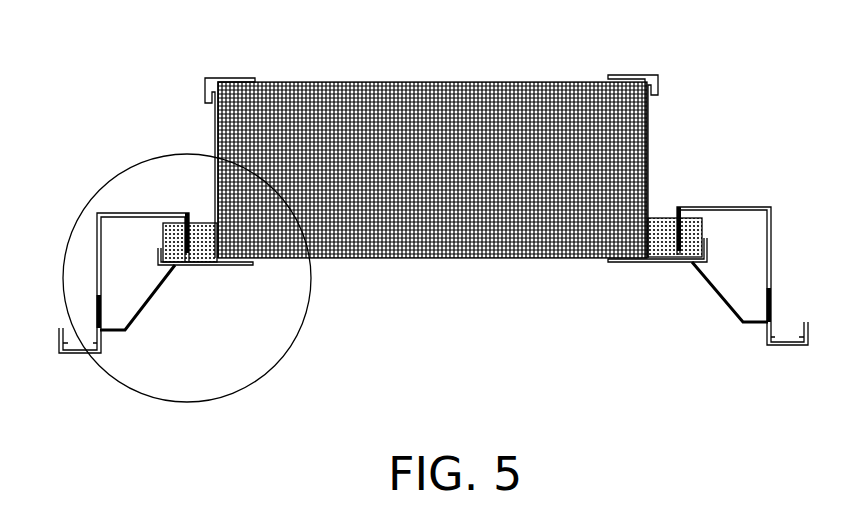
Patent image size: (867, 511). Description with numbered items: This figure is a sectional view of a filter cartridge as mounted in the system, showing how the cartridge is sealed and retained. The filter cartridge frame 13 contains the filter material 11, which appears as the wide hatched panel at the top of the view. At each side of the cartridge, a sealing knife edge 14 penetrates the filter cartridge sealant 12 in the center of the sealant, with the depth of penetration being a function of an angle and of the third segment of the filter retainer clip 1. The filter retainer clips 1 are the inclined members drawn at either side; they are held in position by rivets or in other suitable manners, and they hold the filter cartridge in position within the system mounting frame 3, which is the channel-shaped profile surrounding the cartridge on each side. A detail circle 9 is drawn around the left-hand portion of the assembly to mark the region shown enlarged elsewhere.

The filter retainer clip 1 is at (157, 293).
The system mounting frame 3 is at (98, 248).
The detail circle 9 is at (228, 400).
The filter material 11 is at (437, 97).
The filter cartridge sealant 12 is at (233, 265).
The filter cartridge frame 13 is at (230, 80).
The sealing knife edge 14 is at (185, 212).